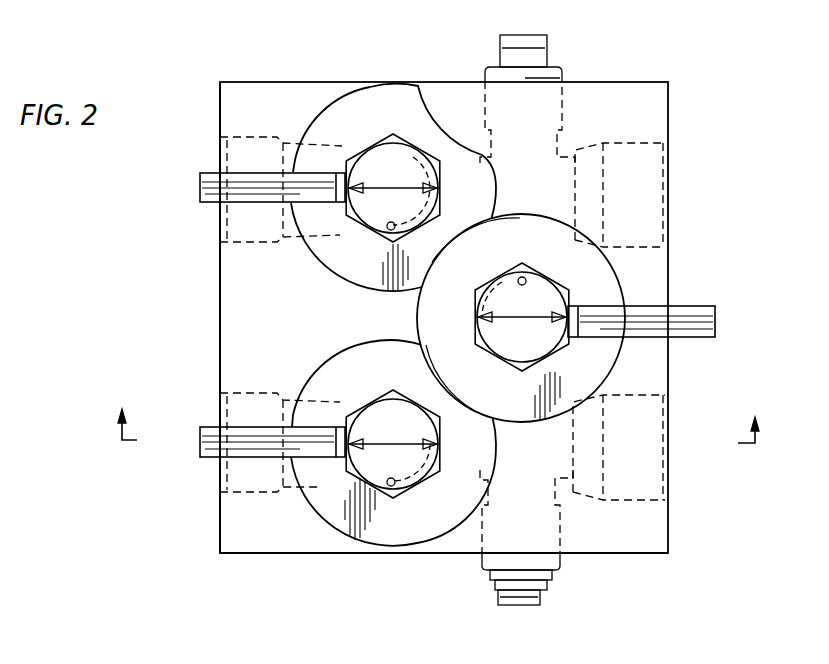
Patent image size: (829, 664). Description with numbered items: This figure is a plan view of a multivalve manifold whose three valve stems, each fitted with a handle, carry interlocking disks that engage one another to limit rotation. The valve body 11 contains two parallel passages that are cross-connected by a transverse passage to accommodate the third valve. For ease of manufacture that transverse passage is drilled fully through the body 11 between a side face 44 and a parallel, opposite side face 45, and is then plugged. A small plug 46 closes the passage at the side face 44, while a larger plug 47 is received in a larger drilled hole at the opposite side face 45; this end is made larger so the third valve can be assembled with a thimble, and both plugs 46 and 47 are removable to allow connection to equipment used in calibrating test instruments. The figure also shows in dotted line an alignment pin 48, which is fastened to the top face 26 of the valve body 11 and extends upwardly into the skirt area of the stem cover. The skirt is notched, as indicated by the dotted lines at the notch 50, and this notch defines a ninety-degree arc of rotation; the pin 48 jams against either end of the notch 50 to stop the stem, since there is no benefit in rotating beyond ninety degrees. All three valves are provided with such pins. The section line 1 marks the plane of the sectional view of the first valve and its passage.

The section line 1- 1 is at (435, 414).
The valve body 11 is at (219, 341).
The top face 26 is at (303, 336).
The side face 44 is at (641, 82).
The side face 45 is at (262, 553).
The small plug 46 is at (536, 46).
The larger plug 47 is at (560, 563).
The alignment pin 48 is at (383, 229).
The notch 50 is at (413, 157).